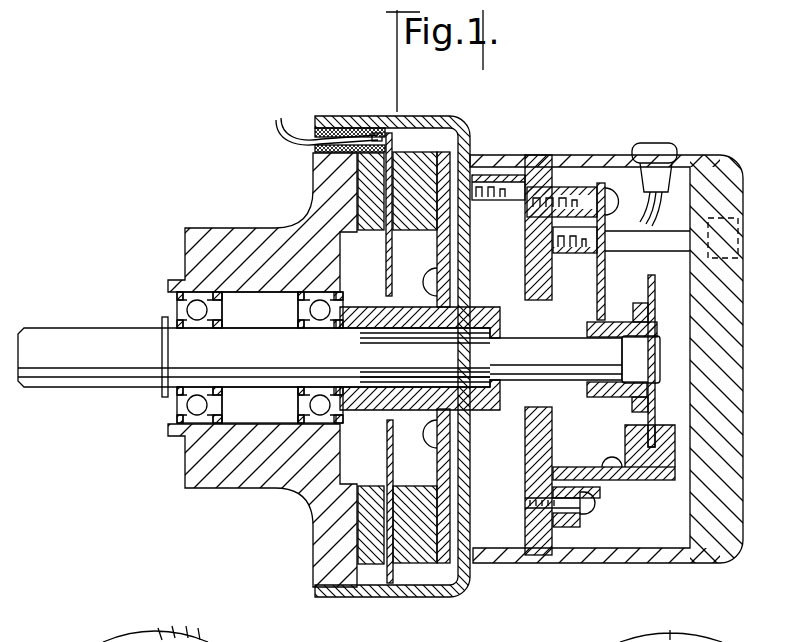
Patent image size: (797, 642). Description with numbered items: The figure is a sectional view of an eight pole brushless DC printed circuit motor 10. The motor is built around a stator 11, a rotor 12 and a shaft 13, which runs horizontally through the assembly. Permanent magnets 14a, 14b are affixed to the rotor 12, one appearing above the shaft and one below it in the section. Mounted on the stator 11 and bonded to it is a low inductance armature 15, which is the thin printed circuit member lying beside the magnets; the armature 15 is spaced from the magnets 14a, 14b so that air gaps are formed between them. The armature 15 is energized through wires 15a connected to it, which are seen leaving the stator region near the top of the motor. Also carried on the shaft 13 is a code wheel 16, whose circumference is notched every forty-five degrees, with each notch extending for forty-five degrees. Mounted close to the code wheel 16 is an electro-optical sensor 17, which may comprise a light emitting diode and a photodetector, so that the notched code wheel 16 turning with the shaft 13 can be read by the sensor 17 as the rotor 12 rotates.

The brushless printed circuit motor 10 is at (236, 79).
The stator 11 is at (244, 490).
The rotor 12 is at (481, 412).
The shaft 13 is at (67, 342).
The permanent magnet 14a is at (421, 160).
The permanent magnet 14b is at (421, 560).
The low inductance armature 15 is at (386, 185).
The wires 15a is at (283, 143).
The code wheel 16 is at (648, 272).
The electro-optical sensor 17 is at (634, 481).